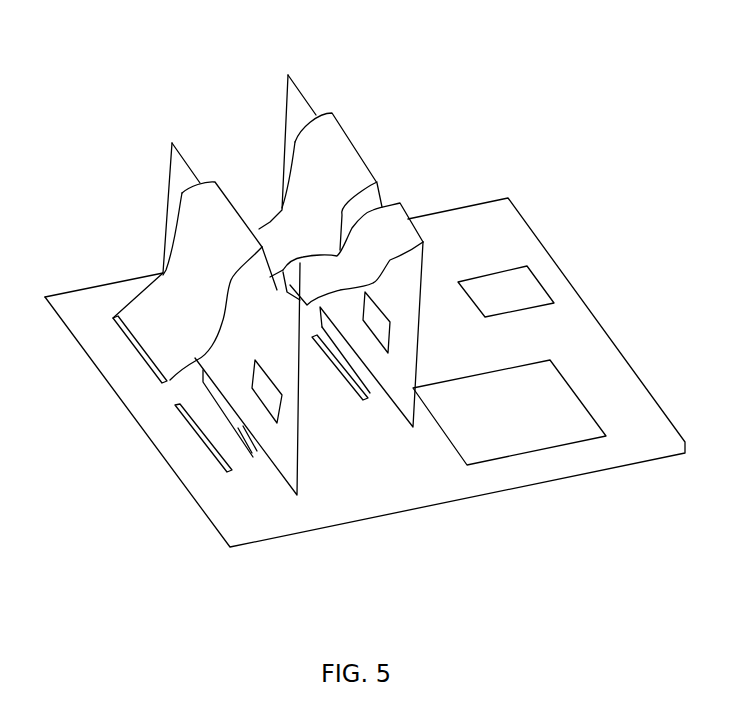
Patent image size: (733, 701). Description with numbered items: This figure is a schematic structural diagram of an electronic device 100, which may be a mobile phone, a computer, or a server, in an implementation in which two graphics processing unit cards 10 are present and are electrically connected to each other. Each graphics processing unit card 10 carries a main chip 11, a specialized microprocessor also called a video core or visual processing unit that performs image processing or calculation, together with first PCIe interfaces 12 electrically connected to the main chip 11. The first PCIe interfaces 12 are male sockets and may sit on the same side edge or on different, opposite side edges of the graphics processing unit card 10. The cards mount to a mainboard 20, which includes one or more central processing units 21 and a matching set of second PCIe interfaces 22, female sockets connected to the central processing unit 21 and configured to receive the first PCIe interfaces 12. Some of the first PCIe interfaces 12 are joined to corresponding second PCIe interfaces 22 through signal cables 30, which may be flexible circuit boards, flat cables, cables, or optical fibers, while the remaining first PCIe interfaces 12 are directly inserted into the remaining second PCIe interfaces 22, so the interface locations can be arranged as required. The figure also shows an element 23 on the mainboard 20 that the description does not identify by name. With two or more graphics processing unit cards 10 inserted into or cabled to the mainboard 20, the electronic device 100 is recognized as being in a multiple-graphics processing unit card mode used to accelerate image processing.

The electronic device 100 is at (285, 40).
The graphics processing unit card 10 is at (183, 193).
The main chip 11 is at (263, 385).
The first PCIe interface 12 is at (378, 183).
The mainboard 20 is at (567, 313).
The central processing unit 21 is at (538, 418).
The second PCIe interface 22 is at (180, 433).
The opening 23 is at (504, 285).
The signal cable 30 is at (313, 193).